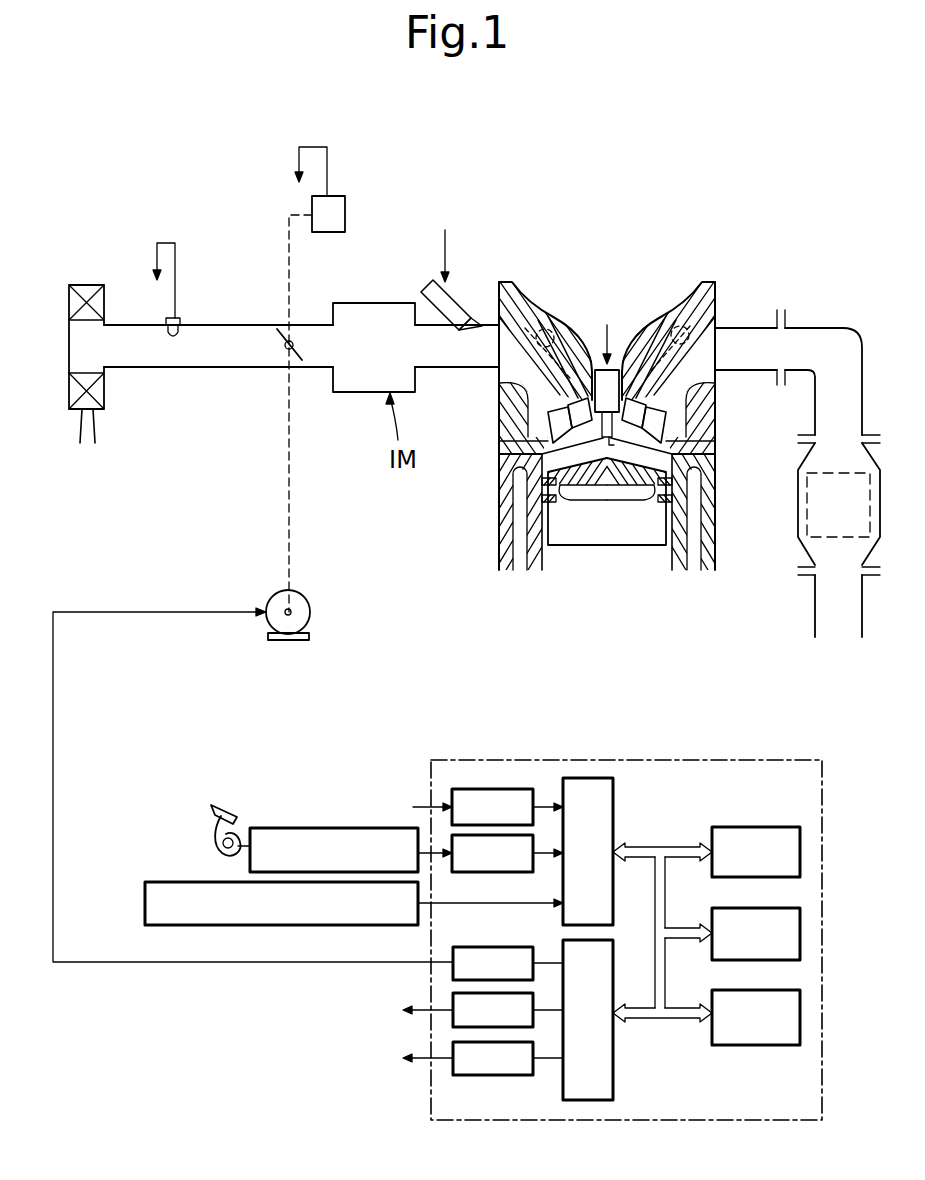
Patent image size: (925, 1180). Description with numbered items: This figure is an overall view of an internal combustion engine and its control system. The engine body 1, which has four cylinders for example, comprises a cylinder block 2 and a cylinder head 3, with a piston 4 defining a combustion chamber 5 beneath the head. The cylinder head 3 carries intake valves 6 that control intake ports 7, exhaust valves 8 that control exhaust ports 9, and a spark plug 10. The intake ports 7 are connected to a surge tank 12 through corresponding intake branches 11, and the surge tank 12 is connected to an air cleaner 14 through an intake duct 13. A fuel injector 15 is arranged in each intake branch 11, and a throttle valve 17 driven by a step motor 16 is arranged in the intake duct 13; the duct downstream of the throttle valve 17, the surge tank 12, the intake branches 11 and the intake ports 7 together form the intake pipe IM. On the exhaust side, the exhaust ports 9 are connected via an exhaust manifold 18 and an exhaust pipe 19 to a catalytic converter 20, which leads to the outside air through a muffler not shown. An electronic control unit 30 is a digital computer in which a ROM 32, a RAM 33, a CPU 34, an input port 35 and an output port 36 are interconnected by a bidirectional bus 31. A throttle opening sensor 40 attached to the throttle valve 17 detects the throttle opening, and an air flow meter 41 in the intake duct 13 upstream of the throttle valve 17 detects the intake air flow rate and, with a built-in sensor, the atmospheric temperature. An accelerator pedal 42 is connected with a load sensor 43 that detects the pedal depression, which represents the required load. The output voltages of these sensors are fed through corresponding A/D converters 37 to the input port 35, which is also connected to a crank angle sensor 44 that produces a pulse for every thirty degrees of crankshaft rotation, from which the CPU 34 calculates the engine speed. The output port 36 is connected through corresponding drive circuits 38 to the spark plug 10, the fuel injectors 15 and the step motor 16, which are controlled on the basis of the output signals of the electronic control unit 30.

The engine body 1 is at (620, 563).
The cylinder block 2 is at (499, 543).
The cylinder head 3 is at (715, 318).
The piston 4 is at (587, 532).
The combustion chamber 5 is at (648, 455).
The intake valves 6 is at (590, 375).
The intake ports 7 is at (540, 315).
The exhaust valves 8 is at (690, 415).
The exhaust ports 9 is at (672, 337).
The spark plug 10 is at (622, 372).
The intake branches 11 is at (464, 368).
The surge tank 12 is at (388, 303).
The intake duct 13 is at (258, 325).
The air cleaner 14 is at (88, 285).
The fuel injector 15 is at (460, 292).
The step motor 16 is at (310, 612).
The throttle valve 17 is at (303, 352).
The exhaust manifold 18 is at (770, 325).
The exhaust pipe 19 is at (840, 328).
The catalytic converter 20 is at (797, 510).
The electronic control unit 30 is at (730, 758).
The bidirectional bus 31 is at (663, 845).
The ROM 32 is at (758, 827).
The RAM 33 is at (770, 908).
The CPU 34 is at (750, 1045).
The input port 35 is at (613, 805).
The output port 36 is at (613, 1082).
The A/D converters 37 is at (452, 840).
The drive circuits 38 is at (453, 1050).
The throttle opening sensor 40 is at (333, 235).
The air flow meter 41 is at (178, 312).
The accelerator pedal 42 is at (214, 836).
The load sensor 43 is at (295, 828).
The crank angle sensor 44 is at (185, 882).